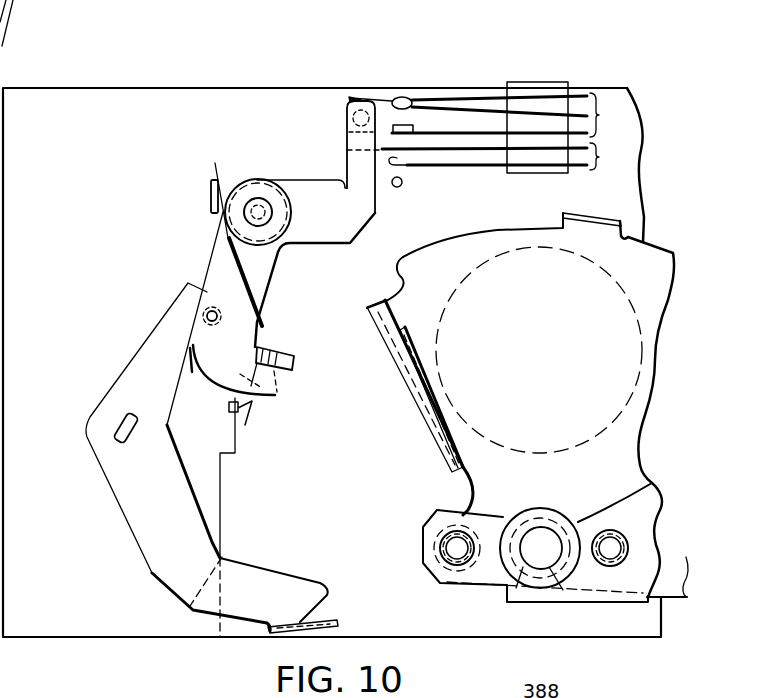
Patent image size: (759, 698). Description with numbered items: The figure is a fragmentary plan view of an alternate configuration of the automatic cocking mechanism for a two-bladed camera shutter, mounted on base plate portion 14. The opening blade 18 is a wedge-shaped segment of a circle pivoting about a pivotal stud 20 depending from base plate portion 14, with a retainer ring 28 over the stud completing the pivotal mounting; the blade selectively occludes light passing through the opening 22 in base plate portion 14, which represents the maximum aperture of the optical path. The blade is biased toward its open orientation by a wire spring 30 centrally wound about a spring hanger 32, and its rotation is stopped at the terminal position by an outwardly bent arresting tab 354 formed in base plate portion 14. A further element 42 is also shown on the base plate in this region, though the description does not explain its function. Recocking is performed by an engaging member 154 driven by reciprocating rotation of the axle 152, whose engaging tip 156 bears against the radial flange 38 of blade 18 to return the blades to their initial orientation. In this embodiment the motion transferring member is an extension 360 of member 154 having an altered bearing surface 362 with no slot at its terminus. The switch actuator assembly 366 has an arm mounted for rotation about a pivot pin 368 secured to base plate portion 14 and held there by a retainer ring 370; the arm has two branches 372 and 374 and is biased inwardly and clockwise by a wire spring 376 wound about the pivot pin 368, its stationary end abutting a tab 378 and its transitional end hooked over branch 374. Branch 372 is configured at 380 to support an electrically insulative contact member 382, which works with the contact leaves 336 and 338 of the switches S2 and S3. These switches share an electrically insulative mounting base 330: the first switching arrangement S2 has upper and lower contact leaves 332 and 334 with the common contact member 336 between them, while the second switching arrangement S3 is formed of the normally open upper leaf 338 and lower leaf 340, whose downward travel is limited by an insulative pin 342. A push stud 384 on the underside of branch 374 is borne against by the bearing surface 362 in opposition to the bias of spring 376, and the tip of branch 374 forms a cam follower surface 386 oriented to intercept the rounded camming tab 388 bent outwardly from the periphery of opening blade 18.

The base plate portion 14 is at (9, 33).
The opening blade 18 is at (484, 230).
The pivotal stud 20 is at (543, 548).
The opening 22 is at (543, 250).
The retainer ring 28 is at (538, 508).
The wire spring 30 is at (462, 430).
The spring hanger 32 is at (440, 547).
The radial flange 38 is at (387, 313).
The pin 42 is at (615, 547).
The axle 152 is at (112, 430).
The engaging member 154 is at (265, 578).
The engaging tip 156 is at (326, 620).
The arresting tab 354 is at (247, 430).
The motion transferring member 360 is at (137, 364).
The bearing surface 362 is at (195, 350).
The switch actuator assembly 366 is at (247, 175).
The pivot pin 368 is at (259, 200).
The retainer ring 370 is at (272, 193).
The branch 372 is at (323, 180).
The branch 374 is at (218, 272).
The wire spring 376 is at (238, 249).
The tab 378 is at (211, 197).
The support configuration 380 is at (341, 110).
The contact member 382 is at (358, 97).
The push stud 384 is at (207, 313).
The cam follower surface 386 is at (288, 348).
The camming tab 388 is at (597, 228).
The mounting base 330 is at (533, 82).
The upper contact leaf 332 is at (577, 93).
The lower contact leaf 334 is at (447, 130).
The common contact member 336 is at (383, 97).
The upper contact leaf 338 is at (425, 156).
The lower contact leaf 340 is at (577, 168).
The insulative pin 342 is at (398, 188).
The first switching arrangement S2 is at (606, 115).
The second switching arrangement S3 is at (606, 157).